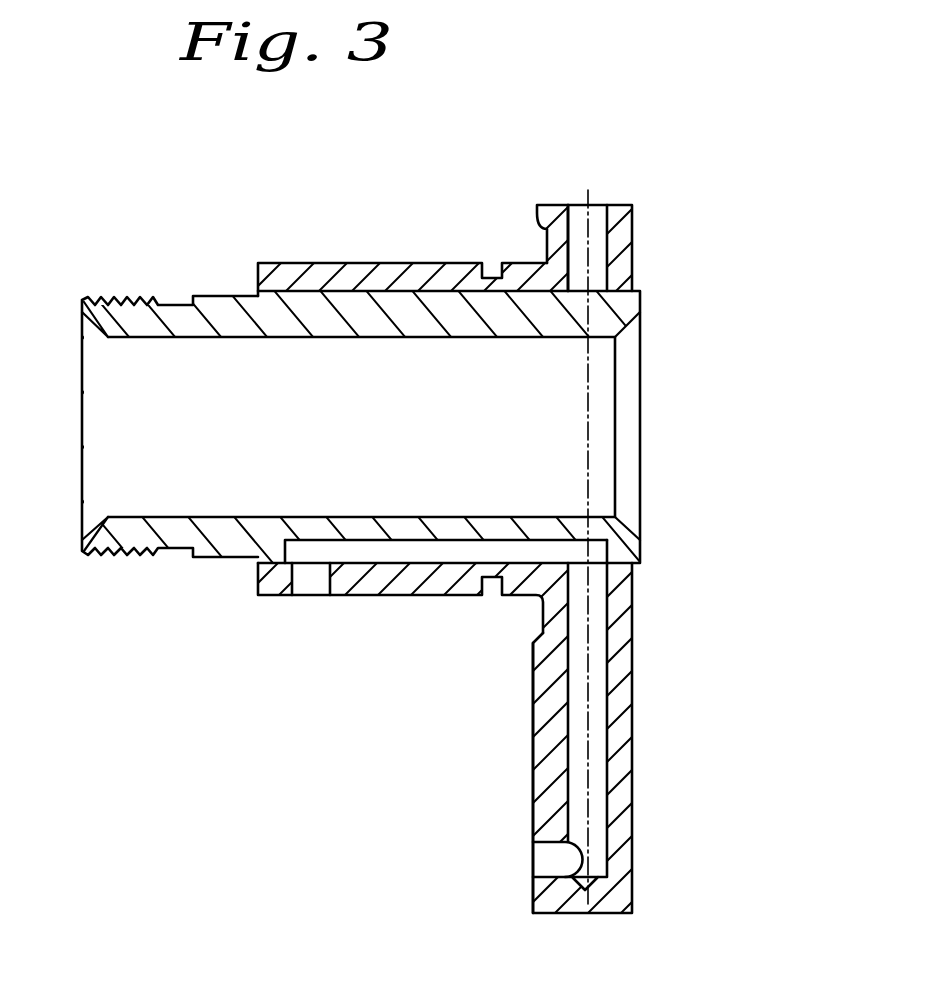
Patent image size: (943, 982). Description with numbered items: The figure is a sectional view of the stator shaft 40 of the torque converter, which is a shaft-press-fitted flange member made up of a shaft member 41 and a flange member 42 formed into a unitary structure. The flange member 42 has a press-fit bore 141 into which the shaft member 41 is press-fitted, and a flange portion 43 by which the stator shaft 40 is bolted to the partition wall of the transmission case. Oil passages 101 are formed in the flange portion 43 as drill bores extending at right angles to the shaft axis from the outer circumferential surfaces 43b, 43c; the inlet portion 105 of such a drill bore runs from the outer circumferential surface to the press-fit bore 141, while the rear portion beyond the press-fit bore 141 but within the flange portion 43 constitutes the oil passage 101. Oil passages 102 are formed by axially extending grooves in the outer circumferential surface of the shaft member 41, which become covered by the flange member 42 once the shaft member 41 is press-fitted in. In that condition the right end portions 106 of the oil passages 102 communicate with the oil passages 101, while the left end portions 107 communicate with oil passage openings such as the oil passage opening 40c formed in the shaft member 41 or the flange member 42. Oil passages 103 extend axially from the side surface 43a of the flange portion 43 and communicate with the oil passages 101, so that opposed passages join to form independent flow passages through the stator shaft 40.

The stator shaft 40 is at (598, 168).
The shaft member 41 is at (643, 308).
The flange member 42 is at (335, 258).
The flange portion 43 is at (622, 766).
The side surface 43a is at (533, 782).
The outer circumferential surface 43b is at (618, 205).
The outer circumferential surface 43c is at (618, 205).
The oil passage opening 40c is at (308, 578).
The oil passages 101 is at (594, 690).
The oil passages 102 is at (420, 553).
The oil passages 103 is at (546, 864).
The inlet portion 105 is at (592, 249).
The right end portions 106 is at (583, 549).
The left end portions 107 is at (322, 550).
The press-fit bore 141 is at (330, 292).